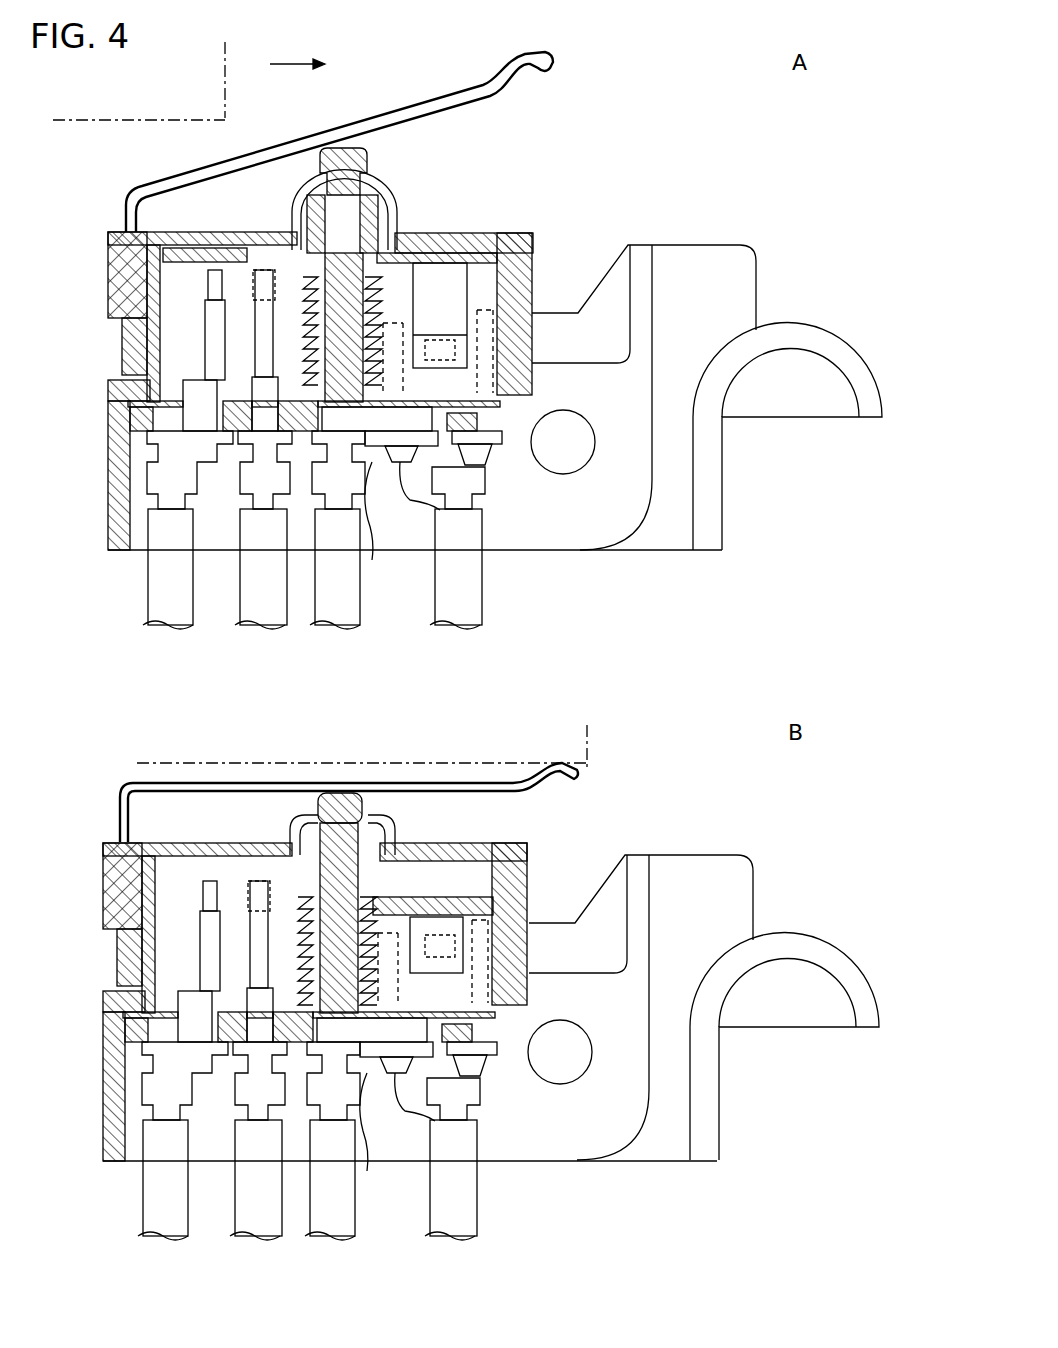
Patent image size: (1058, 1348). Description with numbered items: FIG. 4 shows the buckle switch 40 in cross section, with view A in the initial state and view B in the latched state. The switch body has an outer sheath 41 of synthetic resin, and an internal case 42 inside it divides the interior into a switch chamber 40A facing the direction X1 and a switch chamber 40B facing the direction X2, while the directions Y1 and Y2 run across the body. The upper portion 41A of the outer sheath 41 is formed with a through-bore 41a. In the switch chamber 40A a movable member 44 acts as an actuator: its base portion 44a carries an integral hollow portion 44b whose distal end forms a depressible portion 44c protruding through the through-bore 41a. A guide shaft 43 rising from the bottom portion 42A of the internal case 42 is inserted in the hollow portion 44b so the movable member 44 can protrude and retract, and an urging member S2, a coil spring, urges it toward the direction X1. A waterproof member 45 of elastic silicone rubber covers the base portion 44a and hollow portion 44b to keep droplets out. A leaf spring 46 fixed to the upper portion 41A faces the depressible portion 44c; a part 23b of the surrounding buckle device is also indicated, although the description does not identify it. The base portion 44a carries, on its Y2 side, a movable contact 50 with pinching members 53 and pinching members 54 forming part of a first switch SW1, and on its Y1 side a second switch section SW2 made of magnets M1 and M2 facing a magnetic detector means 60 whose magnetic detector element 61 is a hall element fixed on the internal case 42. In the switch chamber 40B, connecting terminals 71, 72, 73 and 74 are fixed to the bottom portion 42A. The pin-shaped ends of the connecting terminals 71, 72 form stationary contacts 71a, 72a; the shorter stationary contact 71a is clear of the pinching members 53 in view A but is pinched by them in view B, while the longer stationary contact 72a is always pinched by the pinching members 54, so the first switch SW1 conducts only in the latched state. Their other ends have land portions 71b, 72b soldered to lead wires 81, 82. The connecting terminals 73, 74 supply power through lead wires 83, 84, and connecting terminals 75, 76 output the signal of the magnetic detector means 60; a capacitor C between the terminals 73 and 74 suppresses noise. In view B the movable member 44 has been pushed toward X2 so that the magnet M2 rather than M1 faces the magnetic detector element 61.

The reference line 23b is at (228, 45).
The buckle switch 40 is at (590, 108).
The switch chamber 40A is at (70, 378).
The switch chamber 40B is at (70, 548).
The outer sheath 41 is at (520, 240).
The upper portion 41A is at (487, 235).
The through-bore 41a is at (270, 225).
The internal case 42 is at (540, 240).
The bottom portion 42A is at (500, 440).
The guide shaft 43 is at (338, 530).
The movable member 44 is at (300, 150).
The base portion 44a is at (140, 262).
The hollow portion 44b is at (295, 225).
The depressible portion 44c is at (372, 155).
The waterproof member 45 is at (395, 165).
The leaf spring 46 is at (485, 84).
The movable contact 50 is at (150, 332).
The pinching members 53 is at (215, 250).
The pinching members 54 is at (262, 262).
The magnetic detector means 60 is at (500, 378).
The magnetic detector element 61 is at (510, 345).
The connecting terminal 71 is at (215, 500).
The stationary contact 71a is at (210, 385).
The land portion 71b is at (165, 535).
The connecting terminal 72 is at (282, 500).
The stationary contact 72a is at (268, 340).
The land portion 72b is at (250, 555).
The connecting terminal 73 is at (470, 480).
The connecting terminal 74 is at (390, 470).
The connecting terminal 75 is at (470, 460).
The connecting terminal 76 is at (395, 455).
The lead wire 81 is at (172, 612).
The lead wire 82 is at (265, 612).
The lead wire 83 is at (458, 612).
The lead wire 84 is at (350, 612).
The first switch SW1 is at (179, 268).
The second switch section SW2 is at (480, 312).
The magnet M1 is at (418, 340).
The magnet M2 is at (460, 318).
The urging member S2 is at (300, 330).
The capacitor C is at (415, 535).
The direction X1 is at (695, 700).
The direction X2 is at (695, 700).
The direction Y1 is at (745, 650).
The direction Y2 is at (745, 650).
The dimension a is at (345, 256).
The point b is at (347, 255).
The center line c is at (442, 400).
The center line d is at (885, 417).
The point e is at (795, 600).
The dimension f is at (797, 592).